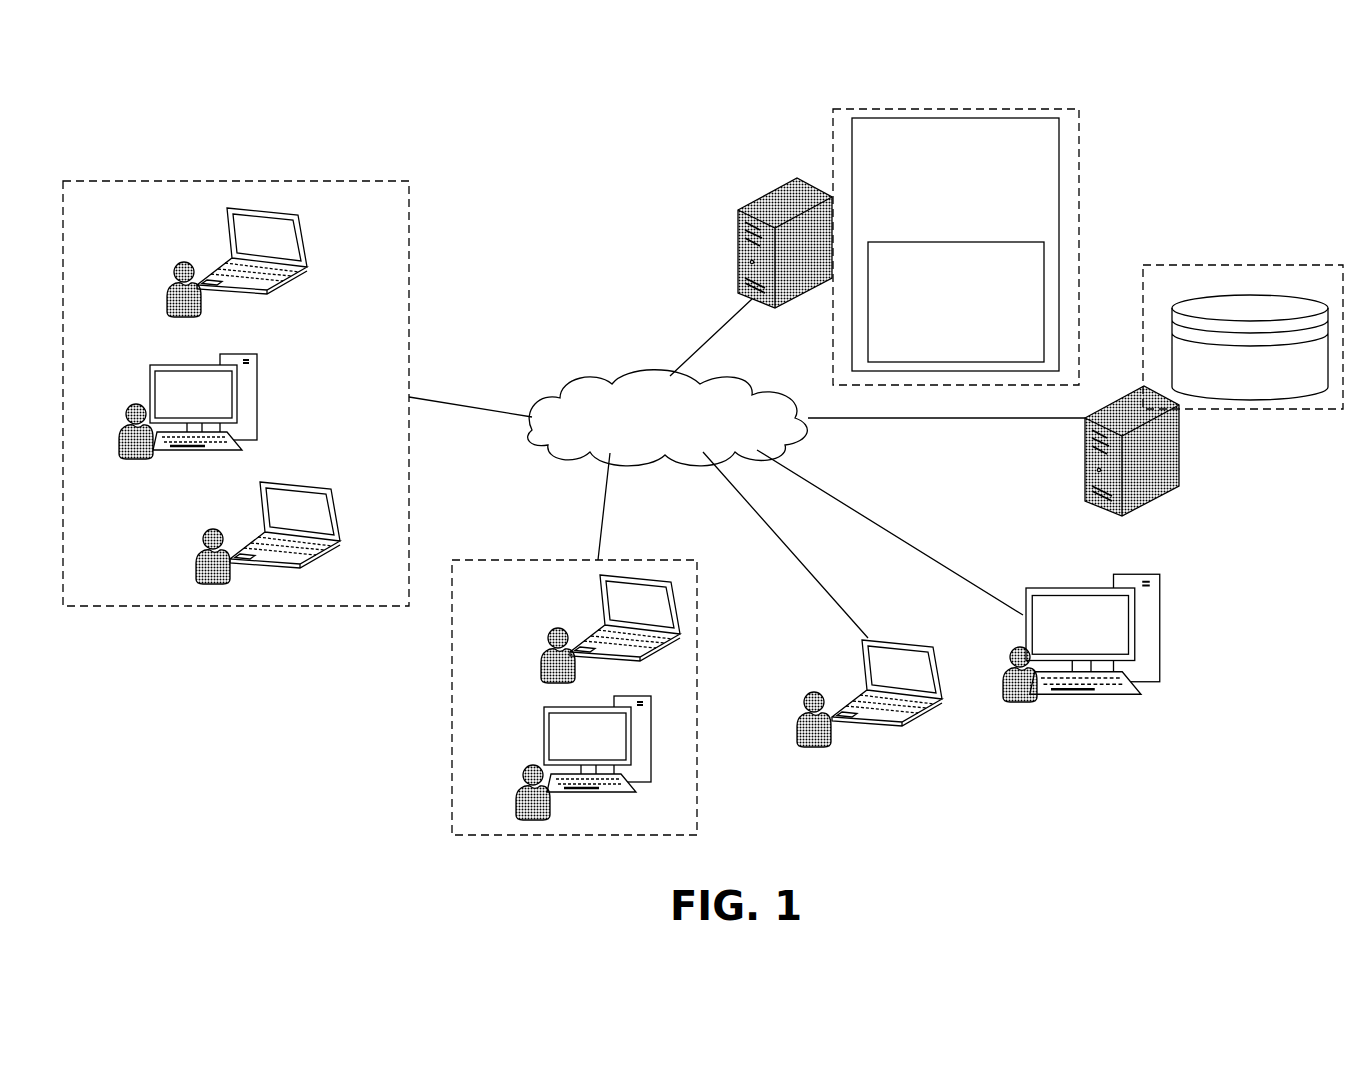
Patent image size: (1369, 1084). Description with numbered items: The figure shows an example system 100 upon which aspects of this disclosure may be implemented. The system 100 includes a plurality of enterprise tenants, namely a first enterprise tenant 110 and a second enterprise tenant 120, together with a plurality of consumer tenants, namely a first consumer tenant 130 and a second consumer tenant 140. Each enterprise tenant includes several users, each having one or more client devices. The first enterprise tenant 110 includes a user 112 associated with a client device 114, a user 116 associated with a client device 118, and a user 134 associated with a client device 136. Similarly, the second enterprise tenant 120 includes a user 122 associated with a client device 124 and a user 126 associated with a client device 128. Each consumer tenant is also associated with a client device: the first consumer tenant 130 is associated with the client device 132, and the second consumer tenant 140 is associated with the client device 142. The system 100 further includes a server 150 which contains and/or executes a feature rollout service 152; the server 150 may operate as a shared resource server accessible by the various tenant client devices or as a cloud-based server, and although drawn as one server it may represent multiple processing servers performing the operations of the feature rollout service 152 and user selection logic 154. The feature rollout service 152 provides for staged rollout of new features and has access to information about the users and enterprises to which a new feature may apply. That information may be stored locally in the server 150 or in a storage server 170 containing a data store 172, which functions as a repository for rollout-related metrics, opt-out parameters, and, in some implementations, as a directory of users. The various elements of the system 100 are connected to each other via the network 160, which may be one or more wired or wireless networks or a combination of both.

The system 100 is at (392, 108).
The first enterprise tenant 110 is at (122, 181).
The user 112 is at (170, 282).
The client device 114 is at (230, 235).
The user 116 is at (130, 426).
The client device 118 is at (167, 366).
The second enterprise tenant 120 is at (510, 560).
The user 122 is at (547, 650).
The client device 124 is at (604, 595).
The user 126 is at (525, 787).
The client device 128 is at (552, 707).
The first consumer tenant 130 is at (805, 712).
The client device 132 is at (860, 660).
The user 134 is at (208, 550).
The client device 136 is at (314, 484).
The second consumer tenant 140 is at (1006, 668).
The client device 142 is at (1082, 583).
The server 150 is at (772, 190).
The feature rollout service 152 is at (956, 247).
The user selection logic 154 is at (956, 302).
The network 160 is at (668, 418).
The storage server 170 is at (1085, 470).
The data store 172 is at (1243, 337).